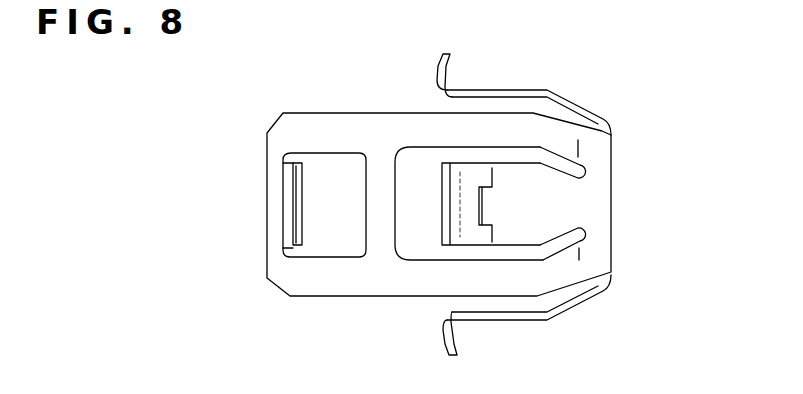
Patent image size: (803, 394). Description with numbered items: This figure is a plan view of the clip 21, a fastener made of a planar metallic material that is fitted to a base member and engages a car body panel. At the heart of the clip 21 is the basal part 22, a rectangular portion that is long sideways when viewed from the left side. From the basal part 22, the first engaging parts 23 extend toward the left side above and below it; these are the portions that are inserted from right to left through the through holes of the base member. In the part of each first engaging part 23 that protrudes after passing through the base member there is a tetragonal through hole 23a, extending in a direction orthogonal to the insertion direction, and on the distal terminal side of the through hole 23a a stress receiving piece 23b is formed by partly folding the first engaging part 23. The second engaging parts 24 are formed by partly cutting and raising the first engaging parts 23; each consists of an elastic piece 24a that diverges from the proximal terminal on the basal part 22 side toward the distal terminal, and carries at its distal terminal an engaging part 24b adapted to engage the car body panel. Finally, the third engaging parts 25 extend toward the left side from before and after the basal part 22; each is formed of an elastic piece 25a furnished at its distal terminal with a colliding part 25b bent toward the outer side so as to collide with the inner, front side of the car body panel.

The clip 21 is at (470, 209).
The basal part 22 is at (612, 257).
The first engaging part 23 is at (283, 195).
The through hole 23a is at (325, 248).
The stress receiving piece 23b is at (293, 202).
The second engaging part 24 is at (568, 203).
The elastic piece 24a is at (537, 222).
The engaging part 24b is at (483, 172).
The third engaging part 25 is at (588, 217).
The elastic piece 25a is at (583, 116).
The colliding part 25b is at (450, 62).